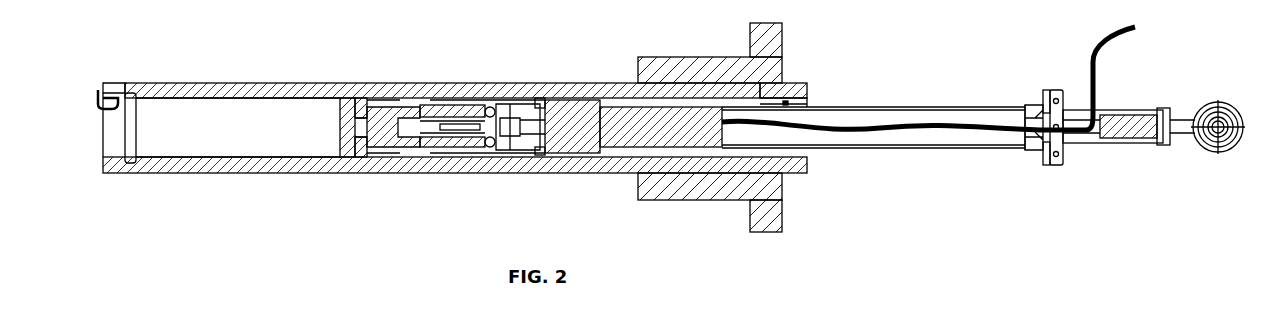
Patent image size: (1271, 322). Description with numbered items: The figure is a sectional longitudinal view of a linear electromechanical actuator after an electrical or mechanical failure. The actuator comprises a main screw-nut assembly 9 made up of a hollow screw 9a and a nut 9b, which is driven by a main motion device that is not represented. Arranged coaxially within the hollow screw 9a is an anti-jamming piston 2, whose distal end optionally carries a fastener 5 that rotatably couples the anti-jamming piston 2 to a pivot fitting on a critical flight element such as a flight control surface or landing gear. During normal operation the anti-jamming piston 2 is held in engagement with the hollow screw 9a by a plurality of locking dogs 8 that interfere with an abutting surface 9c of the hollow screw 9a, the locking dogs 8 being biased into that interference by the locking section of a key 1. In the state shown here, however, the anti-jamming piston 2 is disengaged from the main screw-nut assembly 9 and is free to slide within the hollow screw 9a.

The key 1 is at (381, 118).
The anti-jamming piston 2 is at (890, 101).
The fastener 5 is at (1132, 124).
The locking dogs 8 is at (362, 108).
The main screw-nut assembly 9 is at (770, 87).
The hollow screw 9a is at (571, 90).
The nut 9b is at (651, 72).
The abutting surface 9c is at (98, 90).